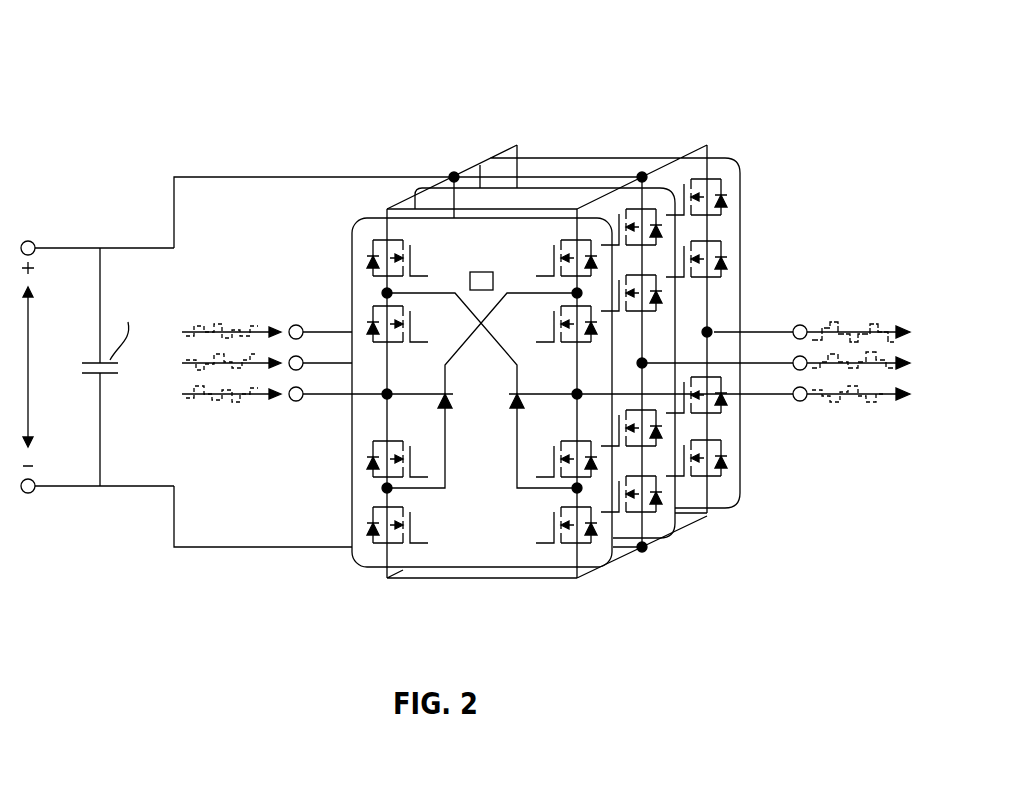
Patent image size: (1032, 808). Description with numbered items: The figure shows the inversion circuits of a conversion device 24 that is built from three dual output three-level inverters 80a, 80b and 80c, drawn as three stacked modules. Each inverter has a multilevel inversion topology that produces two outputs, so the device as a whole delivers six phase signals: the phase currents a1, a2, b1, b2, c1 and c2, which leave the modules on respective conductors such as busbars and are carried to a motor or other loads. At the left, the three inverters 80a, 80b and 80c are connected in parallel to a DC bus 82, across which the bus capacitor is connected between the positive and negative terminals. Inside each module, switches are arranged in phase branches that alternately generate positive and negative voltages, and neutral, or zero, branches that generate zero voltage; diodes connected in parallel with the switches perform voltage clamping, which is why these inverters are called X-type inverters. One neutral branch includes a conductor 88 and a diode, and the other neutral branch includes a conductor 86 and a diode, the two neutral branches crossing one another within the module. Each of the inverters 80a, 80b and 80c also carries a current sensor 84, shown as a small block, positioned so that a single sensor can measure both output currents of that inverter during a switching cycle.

The conversion device 24 is at (195, 63).
The DC bus 82 is at (217, 176).
The dual output inverter 80a is at (482, 420).
The dual output inverter 80b is at (477, 198).
The dual output inverter 80c is at (577, 170).
The current sensor 84 is at (483, 270).
The conductor 86 is at (517, 468).
The conductor 88 is at (443, 428).
The first phase current a1 is at (897, 400).
The phase current b1 is at (825, 372).
The phase current c1 is at (825, 322).
The second phase current a2 is at (232, 405).
The phase current b2 is at (222, 372).
The phase current c2 is at (235, 325).